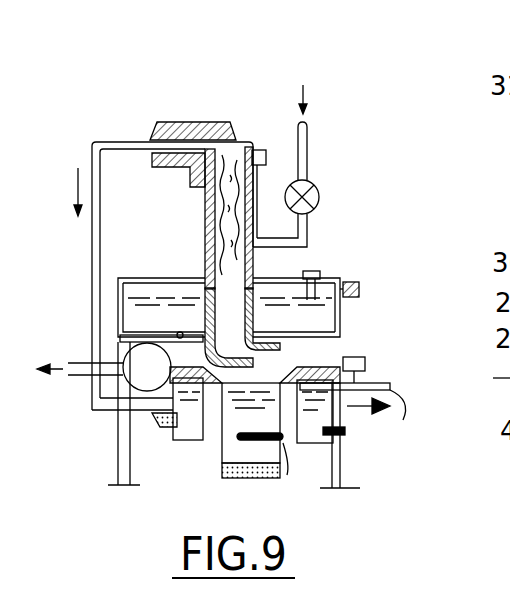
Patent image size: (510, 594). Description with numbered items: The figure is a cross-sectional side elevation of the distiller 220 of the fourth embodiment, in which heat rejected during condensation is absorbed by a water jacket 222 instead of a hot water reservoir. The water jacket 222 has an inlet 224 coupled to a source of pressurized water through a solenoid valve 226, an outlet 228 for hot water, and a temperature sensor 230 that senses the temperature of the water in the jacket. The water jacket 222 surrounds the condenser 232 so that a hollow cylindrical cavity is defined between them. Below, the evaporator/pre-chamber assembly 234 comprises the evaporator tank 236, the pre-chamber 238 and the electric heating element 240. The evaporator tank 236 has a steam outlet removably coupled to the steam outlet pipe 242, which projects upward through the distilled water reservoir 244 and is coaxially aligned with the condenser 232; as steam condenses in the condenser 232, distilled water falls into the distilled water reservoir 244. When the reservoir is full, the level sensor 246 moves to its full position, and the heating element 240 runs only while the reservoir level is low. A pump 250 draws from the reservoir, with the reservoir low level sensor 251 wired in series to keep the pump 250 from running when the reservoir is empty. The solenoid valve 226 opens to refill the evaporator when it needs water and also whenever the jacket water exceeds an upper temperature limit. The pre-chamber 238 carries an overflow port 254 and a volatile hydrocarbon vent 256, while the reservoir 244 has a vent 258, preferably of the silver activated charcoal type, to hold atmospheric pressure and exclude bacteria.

The distiller 220 is at (337, 120).
The water jacket 222 is at (255, 190).
The inlet 224 is at (307, 243).
The solenoid valve 226 is at (318, 182).
The outlet 228 is at (117, 142).
The temperature sensor 230 is at (258, 140).
The condenser 232 is at (205, 212).
The evaporator/pre-chamber assembly 234 is at (216, 457).
The evaporator tank 236 is at (240, 478).
The pre-chamber 238 is at (336, 440).
The electric heating element 240 is at (285, 443).
The steam outlet pipe 242 is at (256, 284).
The distilled water reservoir 244 is at (343, 322).
The level sensor 246 is at (318, 276).
The pump 250 is at (92, 397).
The reservoir low level sensor 251 is at (117, 333).
The overflow port 254 is at (361, 417).
The volatile hydrocarbon vent 256 is at (360, 360).
The vent 258 is at (360, 290).